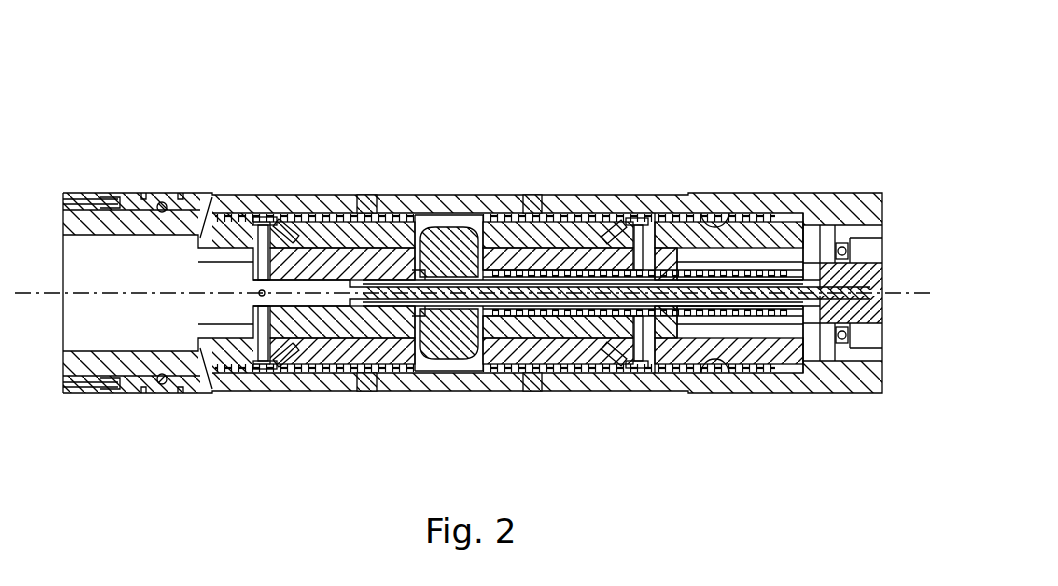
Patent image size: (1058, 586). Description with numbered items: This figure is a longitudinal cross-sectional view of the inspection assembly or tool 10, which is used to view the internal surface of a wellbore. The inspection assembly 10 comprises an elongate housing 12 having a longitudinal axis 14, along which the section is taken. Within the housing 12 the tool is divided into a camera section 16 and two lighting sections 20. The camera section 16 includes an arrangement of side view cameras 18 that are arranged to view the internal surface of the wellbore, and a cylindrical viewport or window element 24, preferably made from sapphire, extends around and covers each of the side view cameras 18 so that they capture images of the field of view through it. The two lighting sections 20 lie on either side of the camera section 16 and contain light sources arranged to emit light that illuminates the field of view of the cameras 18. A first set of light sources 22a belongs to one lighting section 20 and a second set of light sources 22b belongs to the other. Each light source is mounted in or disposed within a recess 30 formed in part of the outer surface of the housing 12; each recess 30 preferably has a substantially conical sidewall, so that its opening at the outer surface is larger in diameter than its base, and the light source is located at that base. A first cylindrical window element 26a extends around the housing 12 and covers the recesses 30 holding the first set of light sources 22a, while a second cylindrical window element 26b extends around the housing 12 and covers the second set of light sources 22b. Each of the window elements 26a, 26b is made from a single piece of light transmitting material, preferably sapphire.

The inspection assembly 10 is at (694, 98).
The elongate housing 12 is at (805, 205).
The longitudinal axis 14 is at (900, 293).
The camera section 16 is at (436, 398).
The side view cameras 18 is at (458, 216).
The lighting sections 20 is at (266, 404).
The first set of light sources 22a is at (296, 384).
The second set of light sources 22b is at (612, 217).
The window element 24 is at (423, 216).
The first window element 26a is at (279, 204).
The second window element 26b is at (668, 203).
The recess 30 is at (313, 213).